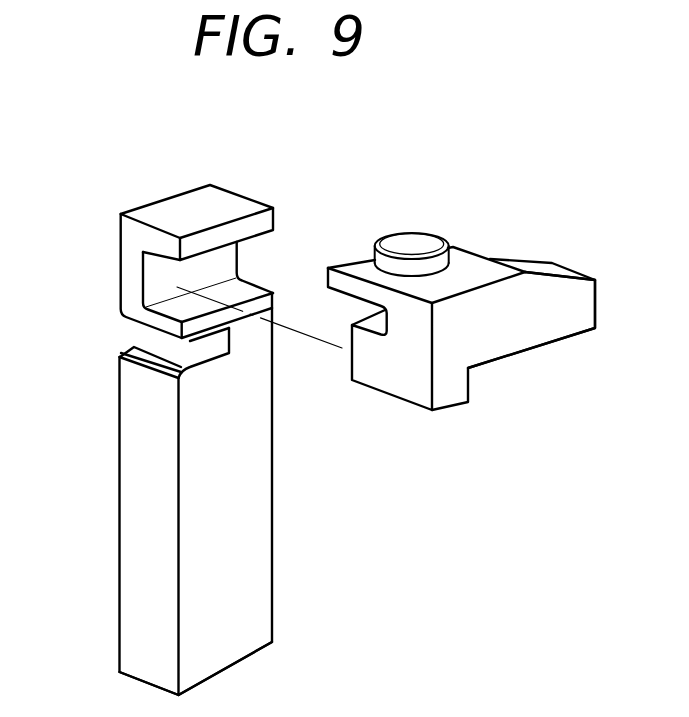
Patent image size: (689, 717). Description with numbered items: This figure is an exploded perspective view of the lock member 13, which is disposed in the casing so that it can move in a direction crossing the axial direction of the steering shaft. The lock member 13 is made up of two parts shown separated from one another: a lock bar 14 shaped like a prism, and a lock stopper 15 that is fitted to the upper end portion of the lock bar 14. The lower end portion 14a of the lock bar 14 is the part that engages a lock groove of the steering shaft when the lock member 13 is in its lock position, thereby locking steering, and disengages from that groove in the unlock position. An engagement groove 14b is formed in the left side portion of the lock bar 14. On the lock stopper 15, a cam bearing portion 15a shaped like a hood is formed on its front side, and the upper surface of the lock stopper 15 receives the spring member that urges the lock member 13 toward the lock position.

The lock member 13 is at (318, 219).
The lock bar 14 is at (260, 519).
The lower end portion 14a is at (232, 665).
The engagement groove 14b is at (172, 353).
The lock stopper 15 is at (467, 262).
The cam bearing portion 15a is at (537, 348).